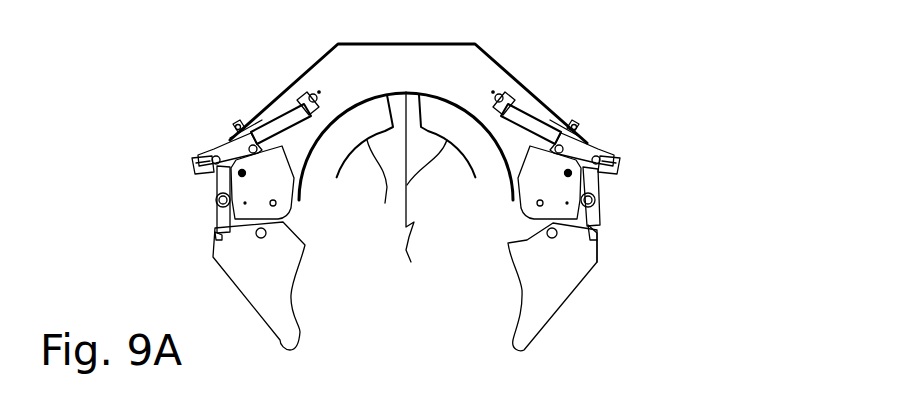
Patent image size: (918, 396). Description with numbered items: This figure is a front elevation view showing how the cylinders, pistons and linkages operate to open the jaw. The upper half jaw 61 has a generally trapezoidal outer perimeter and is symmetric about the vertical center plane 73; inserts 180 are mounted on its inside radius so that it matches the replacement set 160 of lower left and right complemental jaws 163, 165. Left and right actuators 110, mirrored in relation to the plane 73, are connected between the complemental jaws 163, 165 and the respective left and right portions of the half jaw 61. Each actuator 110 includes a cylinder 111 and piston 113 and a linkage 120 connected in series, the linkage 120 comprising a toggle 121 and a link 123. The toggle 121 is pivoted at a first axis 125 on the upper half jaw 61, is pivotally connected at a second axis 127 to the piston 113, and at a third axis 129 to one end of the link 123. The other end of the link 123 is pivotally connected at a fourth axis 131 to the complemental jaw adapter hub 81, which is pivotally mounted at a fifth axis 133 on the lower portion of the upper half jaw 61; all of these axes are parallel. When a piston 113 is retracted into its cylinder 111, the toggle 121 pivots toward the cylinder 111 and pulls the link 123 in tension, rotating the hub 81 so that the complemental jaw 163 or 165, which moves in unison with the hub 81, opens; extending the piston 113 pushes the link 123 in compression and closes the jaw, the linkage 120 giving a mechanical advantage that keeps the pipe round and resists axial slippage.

The upper half jaw 61 is at (320, 55).
The center plane 73 is at (424, 192).
The complemental jaw adapter hub 81 is at (213, 219).
The actuator 110 is at (250, 66).
The cylinder 111 is at (541, 101).
The piston 113 is at (406, 103).
The linkage 120 is at (652, 193).
The toggle 121 is at (192, 160).
The link 123 is at (215, 190).
The first axis 125 is at (568, 174).
The second axis 127 is at (583, 148).
The third axis 129 is at (608, 172).
The fourth axis 131 is at (600, 201).
The fifth axis 133 is at (597, 255).
The replacement set of complemental jaws 160 is at (510, 337).
The lower left complemental jaw 163 is at (560, 288).
The lower right complemental jaw 165 is at (280, 295).
The upper half jaw insert 180 is at (397, 187).